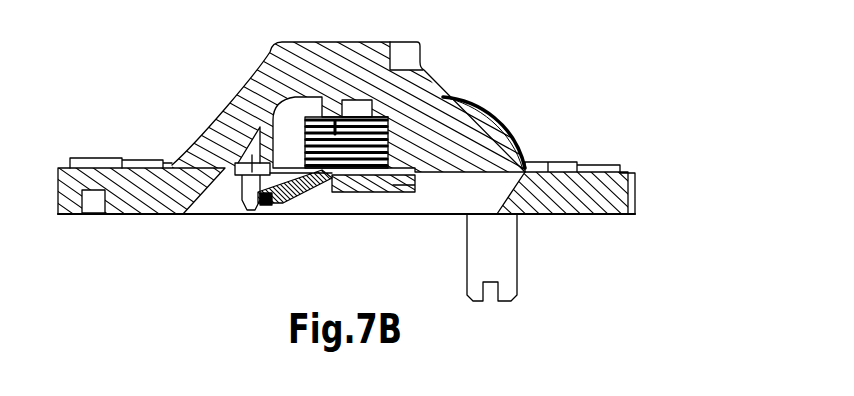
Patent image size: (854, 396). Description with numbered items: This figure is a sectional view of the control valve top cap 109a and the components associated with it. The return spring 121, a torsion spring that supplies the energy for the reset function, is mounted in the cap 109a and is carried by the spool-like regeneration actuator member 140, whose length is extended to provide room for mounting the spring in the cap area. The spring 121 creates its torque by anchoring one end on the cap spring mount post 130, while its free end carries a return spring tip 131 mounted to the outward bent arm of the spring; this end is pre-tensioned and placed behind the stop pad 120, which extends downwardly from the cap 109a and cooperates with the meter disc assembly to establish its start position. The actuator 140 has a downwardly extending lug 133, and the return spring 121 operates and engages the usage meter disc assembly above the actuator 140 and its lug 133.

The control valve top cap 109a is at (603, 200).
The stop pad 120 is at (240, 167).
The return spring 121 is at (388, 147).
The cap spring mount post 130 is at (288, 142).
The return spring tip 131 is at (253, 168).
The downwardly extending lug 133 is at (270, 207).
The regeneration actuator member 140 is at (348, 187).